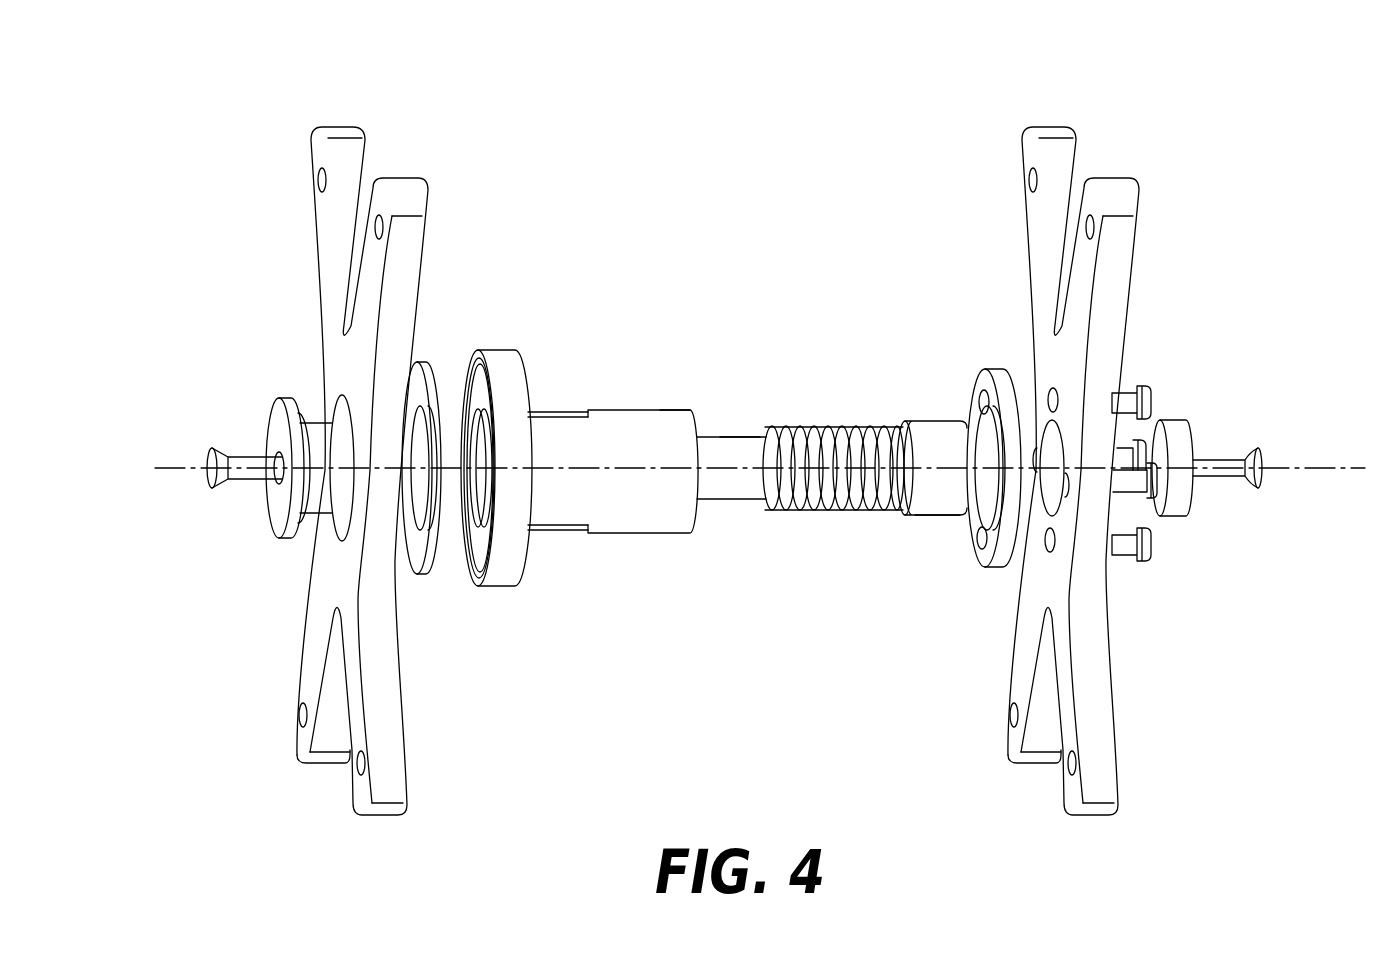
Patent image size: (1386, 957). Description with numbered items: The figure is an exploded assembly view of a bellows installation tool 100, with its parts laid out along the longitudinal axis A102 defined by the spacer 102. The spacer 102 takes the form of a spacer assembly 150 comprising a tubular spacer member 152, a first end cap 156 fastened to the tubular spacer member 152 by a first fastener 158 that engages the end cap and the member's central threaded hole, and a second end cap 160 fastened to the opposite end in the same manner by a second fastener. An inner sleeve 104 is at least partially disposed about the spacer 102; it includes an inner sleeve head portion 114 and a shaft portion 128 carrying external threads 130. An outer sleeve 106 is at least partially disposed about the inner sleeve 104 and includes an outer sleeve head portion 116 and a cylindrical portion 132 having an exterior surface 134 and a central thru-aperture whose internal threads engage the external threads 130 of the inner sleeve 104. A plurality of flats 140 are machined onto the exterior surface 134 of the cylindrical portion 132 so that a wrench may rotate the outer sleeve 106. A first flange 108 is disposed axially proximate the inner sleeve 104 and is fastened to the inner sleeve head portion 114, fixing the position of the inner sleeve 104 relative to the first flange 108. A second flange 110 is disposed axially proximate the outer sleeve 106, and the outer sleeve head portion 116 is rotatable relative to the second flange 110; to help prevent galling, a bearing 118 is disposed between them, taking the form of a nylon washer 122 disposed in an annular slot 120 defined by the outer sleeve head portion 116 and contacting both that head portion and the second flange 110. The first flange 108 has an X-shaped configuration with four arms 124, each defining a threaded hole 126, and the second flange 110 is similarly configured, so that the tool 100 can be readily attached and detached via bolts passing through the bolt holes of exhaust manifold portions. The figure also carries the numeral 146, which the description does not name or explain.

The bellows installation tool 100 is at (970, 82).
The spacer 102 is at (727, 430).
The inner sleeve 104 is at (936, 414).
The outer sleeve 106 is at (566, 405).
The first flange 108 is at (1145, 208).
The second flange 110 is at (339, 116).
The inner sleeve head portion 114 is at (962, 400).
The outer sleeve head portion 116 is at (500, 352).
The bearing 118 is at (462, 562).
The annular slot 120 is at (485, 550).
The nylon washer 122 is at (412, 570).
The arms 124 is at (1056, 130).
The threaded hole 126 is at (1026, 178).
The shaft portion 128 is at (802, 428).
The external threads 130 is at (843, 437).
The cylindrical portion 132 is at (678, 420).
The exterior surface 134 is at (651, 461).
The flats 140 is at (543, 407).
The collar surface 146 is at (924, 508).
The tubular spacer member 152 is at (752, 490).
The spacer assembly 150 is at (258, 525).
The first end cap 156 is at (1178, 437).
The first fastener 158 is at (1252, 450).
The second end cap 160 is at (282, 399).
The longitudinal axis A102 is at (1300, 487).